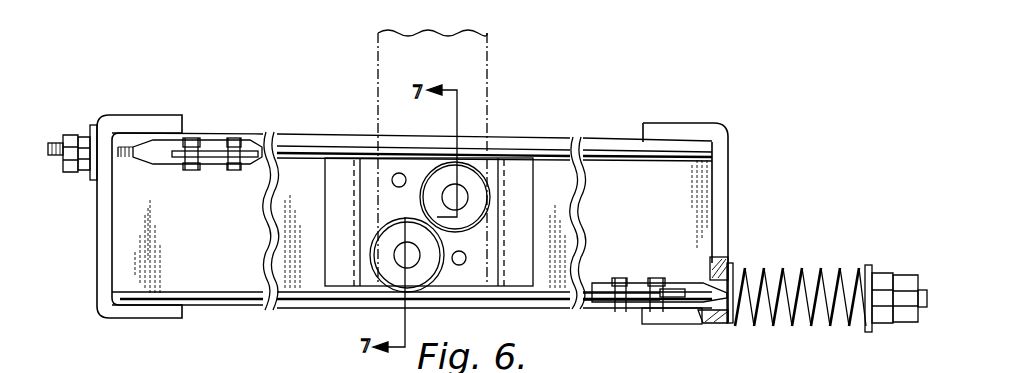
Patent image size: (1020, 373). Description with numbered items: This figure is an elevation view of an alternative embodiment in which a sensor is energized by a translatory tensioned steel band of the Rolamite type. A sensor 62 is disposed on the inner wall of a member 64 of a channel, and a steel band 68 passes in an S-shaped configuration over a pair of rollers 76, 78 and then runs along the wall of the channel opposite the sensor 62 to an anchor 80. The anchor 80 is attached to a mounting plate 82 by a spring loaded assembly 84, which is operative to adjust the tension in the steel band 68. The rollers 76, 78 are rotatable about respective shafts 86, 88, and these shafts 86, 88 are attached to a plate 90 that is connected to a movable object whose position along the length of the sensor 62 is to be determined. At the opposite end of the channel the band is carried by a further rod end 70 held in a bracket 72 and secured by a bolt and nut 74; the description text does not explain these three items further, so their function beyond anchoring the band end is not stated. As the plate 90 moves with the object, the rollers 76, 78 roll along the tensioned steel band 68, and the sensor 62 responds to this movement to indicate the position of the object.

The sensor 62 is at (630, 158).
The member 64 is at (595, 142).
The steel band 68 is at (338, 157).
The left rod end 70 is at (210, 145).
The left bracket 72 is at (144, 114).
The left bolt and nuts 74 is at (72, 140).
The roller 76 is at (425, 193).
The roller 78 is at (433, 260).
The anchor 80 is at (602, 307).
The mounting plate 82 is at (722, 148).
The spring loaded assembly 84 is at (813, 278).
The shaft 86 is at (460, 200).
The shaft 88 is at (405, 253).
The plate 90 is at (400, 40).